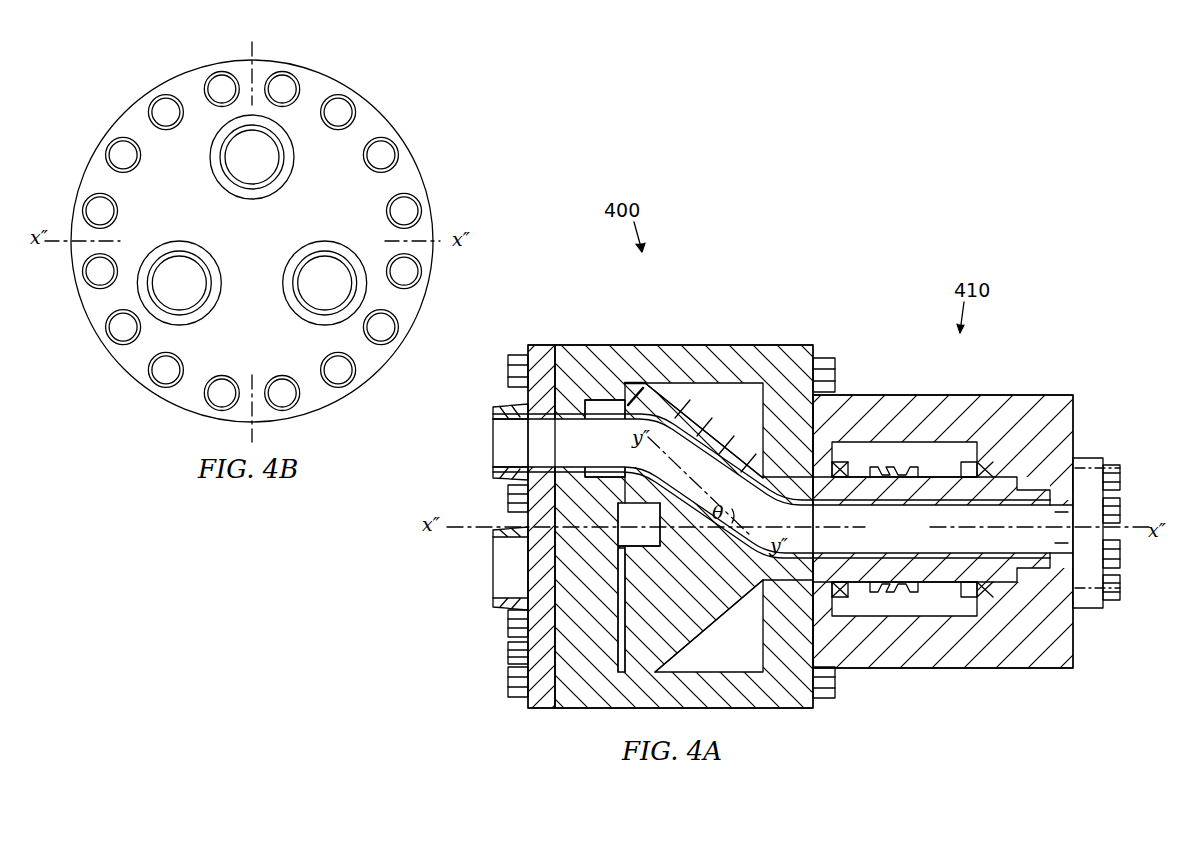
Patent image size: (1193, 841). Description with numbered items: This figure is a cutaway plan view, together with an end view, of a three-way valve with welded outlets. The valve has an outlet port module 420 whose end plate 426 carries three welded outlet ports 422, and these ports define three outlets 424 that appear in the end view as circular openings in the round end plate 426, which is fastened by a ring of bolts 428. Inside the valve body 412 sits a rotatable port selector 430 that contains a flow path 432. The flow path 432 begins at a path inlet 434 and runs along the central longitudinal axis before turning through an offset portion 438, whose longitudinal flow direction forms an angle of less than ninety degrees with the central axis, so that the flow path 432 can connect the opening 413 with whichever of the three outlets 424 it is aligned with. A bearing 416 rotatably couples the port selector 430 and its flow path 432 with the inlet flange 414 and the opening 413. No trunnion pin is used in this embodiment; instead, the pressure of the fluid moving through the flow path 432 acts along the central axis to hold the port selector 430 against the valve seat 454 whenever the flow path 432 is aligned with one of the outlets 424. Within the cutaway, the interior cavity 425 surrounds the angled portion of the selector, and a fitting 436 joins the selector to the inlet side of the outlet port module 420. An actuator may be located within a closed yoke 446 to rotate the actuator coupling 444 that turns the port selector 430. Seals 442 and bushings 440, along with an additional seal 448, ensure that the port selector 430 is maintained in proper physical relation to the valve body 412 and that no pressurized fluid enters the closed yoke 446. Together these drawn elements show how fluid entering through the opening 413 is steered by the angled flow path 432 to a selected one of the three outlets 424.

In FIG. 4A, the body 412 is at (1017, 393).
In FIG. 4A, the opening 413 is at (1135, 533).
In FIG. 4A, the inlet flange 414 is at (1090, 457).
In FIG. 4A, the bearing 416 is at (1072, 556).
In FIG. 4A, the outlet port module 420 is at (587, 328).
In FIG. 4B, the welded outlet ports 422 is at (178, 241).
In FIG. 4A, the welded outlet ports 422 is at (500, 605).
In FIG. 4B, the outlets 424 is at (270, 168).
In FIG. 4A, the outlets 424 is at (497, 462).
In FIG. 4A, the cavity 425 is at (754, 421).
In FIG. 4B, the end plate 426 is at (241, 58).
In FIG. 4A, the end plate 426 is at (540, 712).
In FIG. 4B, the bolts 428 is at (166, 93).
In FIG. 4A, the bolts 428 is at (508, 366).
In FIG. 4A, the port selector 430 is at (706, 632).
In FIG. 4A, the flow path 432 is at (916, 540).
In FIG. 4A, the path inlet 434 is at (1048, 524).
In FIG. 4A, the fitting 436 is at (630, 458).
In FIG. 4A, the offset portion 438 is at (727, 493).
In FIG. 4A, the bushings 440 is at (968, 600).
In FIG. 4A, the seals 442 is at (990, 595).
In FIG. 4A, the actuator coupling 444 is at (915, 440).
In FIG. 4A, the closed yoke 446 is at (870, 442).
In FIG. 4A, the seal 448 is at (908, 600).
In FIG. 4A, the valve seat 454 is at (628, 394).